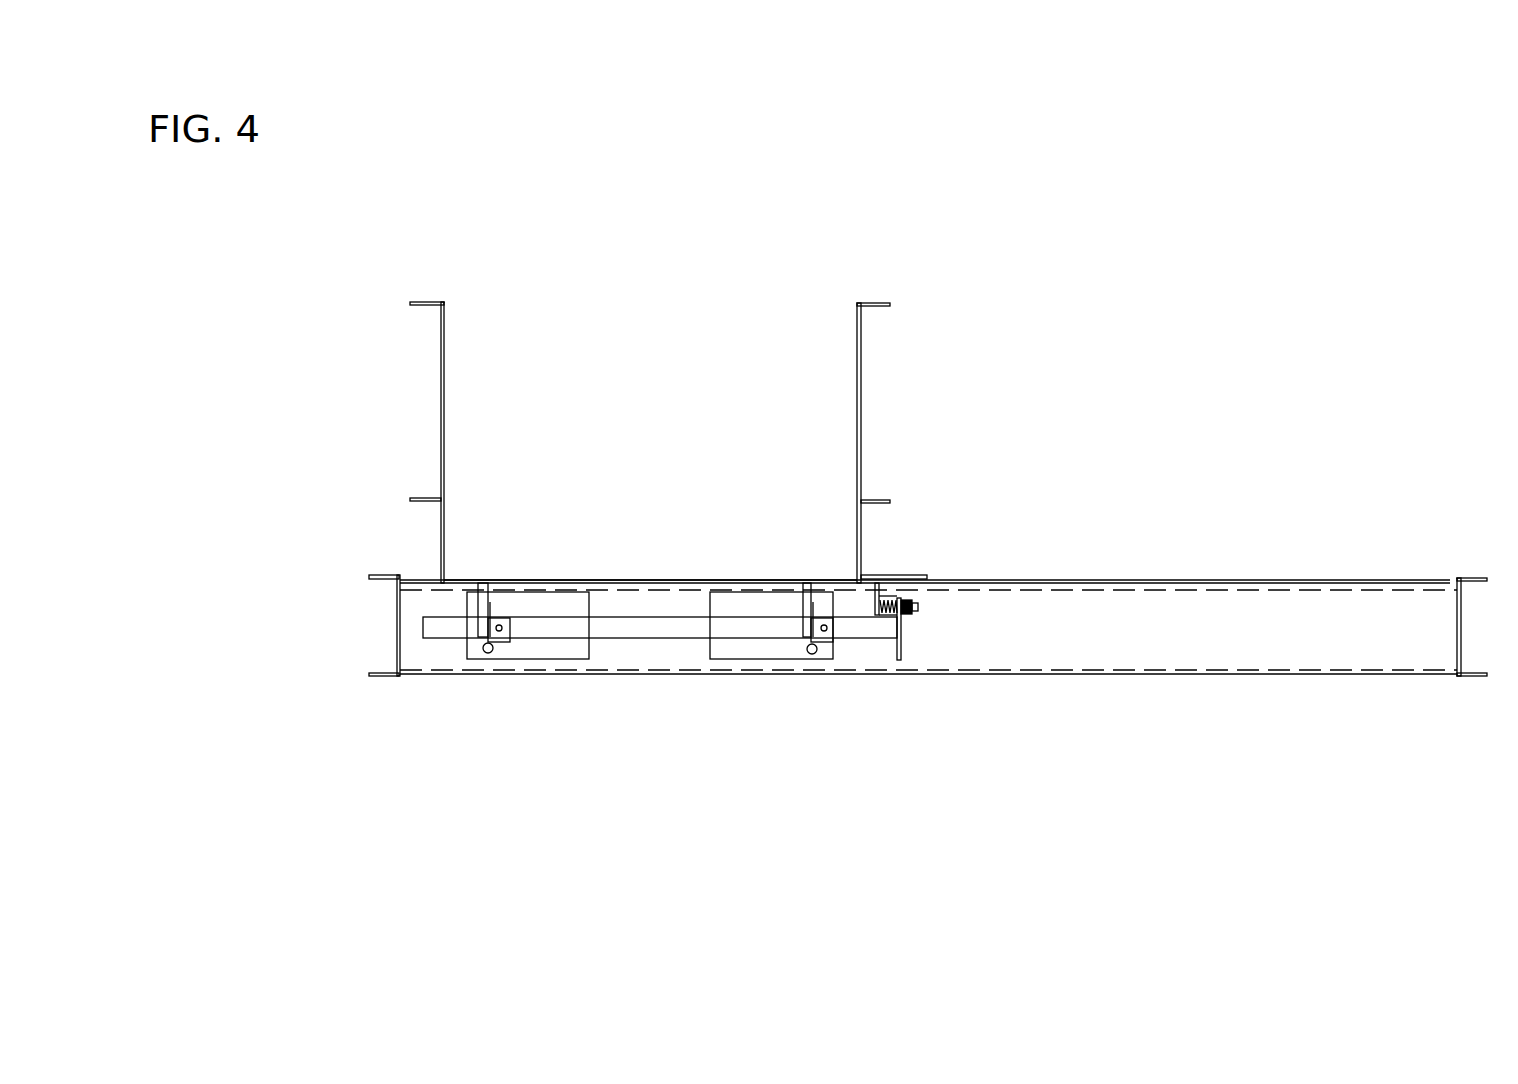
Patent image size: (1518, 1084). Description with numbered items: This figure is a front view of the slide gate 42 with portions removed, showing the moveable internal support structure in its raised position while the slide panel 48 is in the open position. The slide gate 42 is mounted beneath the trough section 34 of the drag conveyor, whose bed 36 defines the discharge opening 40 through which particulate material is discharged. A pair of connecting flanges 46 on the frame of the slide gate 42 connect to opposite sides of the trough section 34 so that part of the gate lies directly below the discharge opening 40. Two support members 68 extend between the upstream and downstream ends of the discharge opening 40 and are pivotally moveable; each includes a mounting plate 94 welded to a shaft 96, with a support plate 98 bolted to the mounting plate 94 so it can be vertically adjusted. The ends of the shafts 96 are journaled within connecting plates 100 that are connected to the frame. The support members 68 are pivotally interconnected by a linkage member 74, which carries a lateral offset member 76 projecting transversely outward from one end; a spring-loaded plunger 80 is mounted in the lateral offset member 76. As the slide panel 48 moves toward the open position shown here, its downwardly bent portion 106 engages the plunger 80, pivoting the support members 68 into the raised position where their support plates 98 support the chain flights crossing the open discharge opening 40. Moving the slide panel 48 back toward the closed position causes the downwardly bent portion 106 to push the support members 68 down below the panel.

The trough section 34 is at (861, 405).
The bed 36 is at (624, 582).
The discharge opening 40 is at (639, 410).
The slide gate 42 is at (1222, 437).
The connecting flanges 46 is at (423, 498).
The slide panel 48 is at (1140, 582).
The support members 68 is at (478, 582).
The linkage member 74 is at (640, 640).
The lateral offset member 76 is at (903, 655).
The plunger 80 is at (893, 596).
The mounting plates 94 is at (500, 618).
The shafts 96 is at (486, 655).
The support plates 98 is at (482, 603).
The connecting plates 100 is at (540, 658).
The downwardly bent portion 106 is at (872, 592).